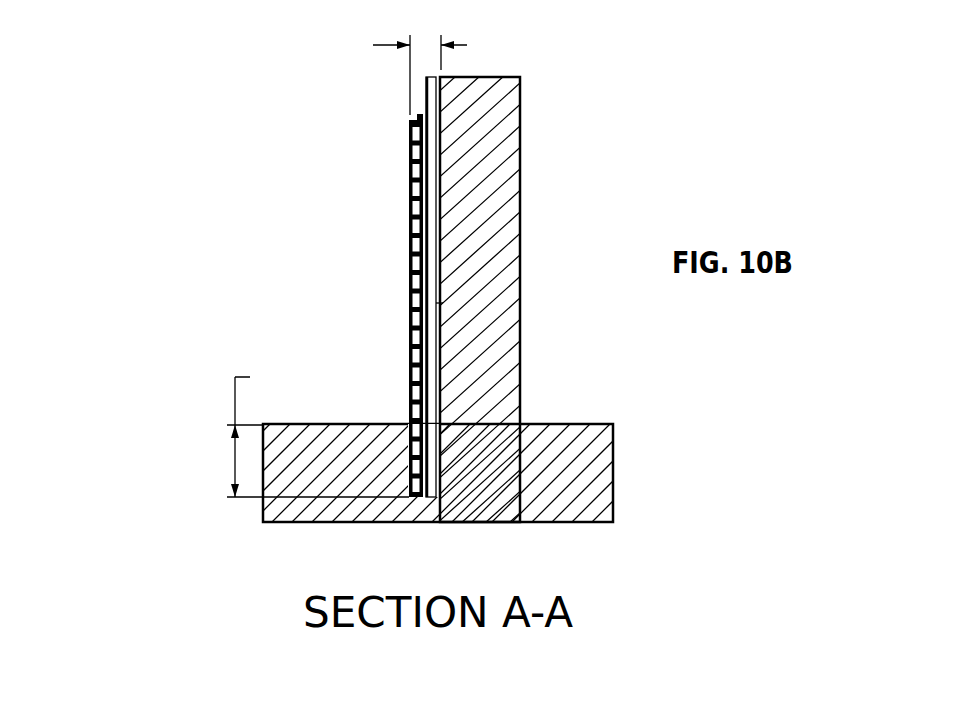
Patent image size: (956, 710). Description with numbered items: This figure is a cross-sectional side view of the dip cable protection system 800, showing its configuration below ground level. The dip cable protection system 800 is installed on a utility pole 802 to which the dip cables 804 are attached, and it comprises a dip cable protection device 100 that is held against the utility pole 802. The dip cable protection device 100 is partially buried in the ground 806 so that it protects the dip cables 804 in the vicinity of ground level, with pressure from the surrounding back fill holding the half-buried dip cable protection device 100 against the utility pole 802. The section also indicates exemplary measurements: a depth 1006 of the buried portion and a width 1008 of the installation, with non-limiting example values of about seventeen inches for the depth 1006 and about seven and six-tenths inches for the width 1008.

The dip cable protection system 800 is at (198, 174).
The dip cable protection device 100 is at (382, 192).
The utility pole 802 is at (520, 307).
The dip cables 804 is at (427, 156).
The ground 806 is at (555, 424).
The depth 1006 is at (297, 386).
The width 1008 is at (515, 53).